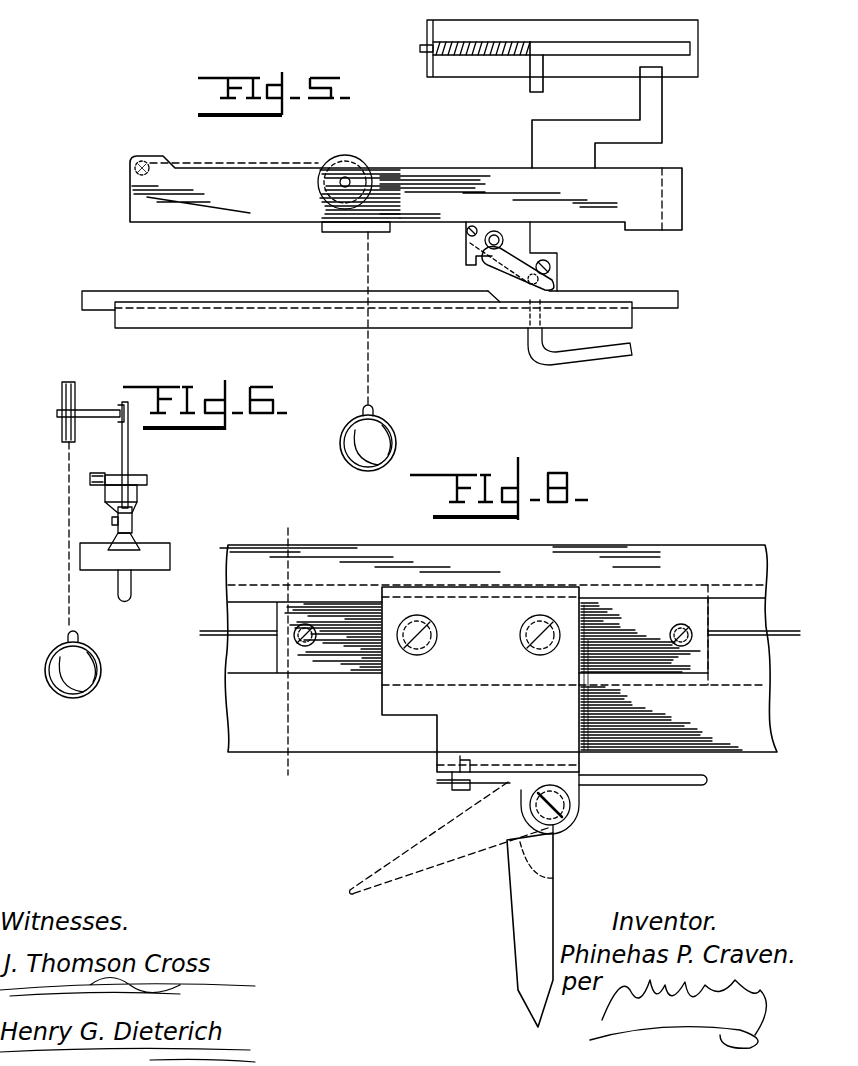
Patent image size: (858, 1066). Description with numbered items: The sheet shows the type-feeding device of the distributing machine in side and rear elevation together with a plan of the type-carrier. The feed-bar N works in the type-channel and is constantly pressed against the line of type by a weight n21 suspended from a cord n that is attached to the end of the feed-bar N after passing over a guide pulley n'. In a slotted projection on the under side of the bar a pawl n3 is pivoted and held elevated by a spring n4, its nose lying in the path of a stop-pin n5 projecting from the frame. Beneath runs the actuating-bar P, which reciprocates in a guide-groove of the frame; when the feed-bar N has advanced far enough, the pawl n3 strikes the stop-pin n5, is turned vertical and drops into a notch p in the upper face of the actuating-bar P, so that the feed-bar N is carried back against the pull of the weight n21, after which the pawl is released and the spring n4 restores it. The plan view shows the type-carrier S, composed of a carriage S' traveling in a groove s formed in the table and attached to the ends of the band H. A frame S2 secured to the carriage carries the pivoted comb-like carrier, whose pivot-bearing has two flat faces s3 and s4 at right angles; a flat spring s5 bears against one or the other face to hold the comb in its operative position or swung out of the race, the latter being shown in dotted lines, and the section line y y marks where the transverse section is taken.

In FIG. 5, the feed-bar N is at (406, 193).
In FIG. 6, the feed-bar N is at (147, 497).
In FIG. 5, the cord n is at (273, 273).
In FIG. 6, the cord n is at (49, 509).
In FIG. 5, the guide pulley n' is at (475, 260).
In FIG. 6, the guide pulley n' is at (114, 482).
In FIG. 5, the weight n21 is at (396, 428).
In FIG. 6, the weight n21 is at (94, 658).
In FIG. 5, the actuating-bar P is at (155, 284).
In FIG. 6, the actuating-bar P is at (142, 548).
In FIG. 5, the notch p is at (501, 295).
In FIG. 5, the pawl n3 is at (532, 252).
In FIG. 6, the pawl n3 is at (132, 516).
In FIG. 5, the spring n4 is at (491, 264).
In FIG. 6, the spring n4 is at (103, 490).
In FIG. 5, the stop-pin n5 is at (552, 268).
In FIG. 8, the section line y is at (285, 648).
In FIG. 8, the band H is at (238, 623).
In FIG. 8, the groove s is at (305, 637).
In FIG. 8, the flat face s4 is at (416, 749).
In FIG. 8, the type-carrier S is at (480, 688).
In FIG. 8, the carriage S' is at (689, 635).
In FIG. 8, the frame S2 is at (625, 676).
In FIG. 8, the flat face s3 is at (576, 790).
In FIG. 8, the flat spring s5 is at (666, 786).